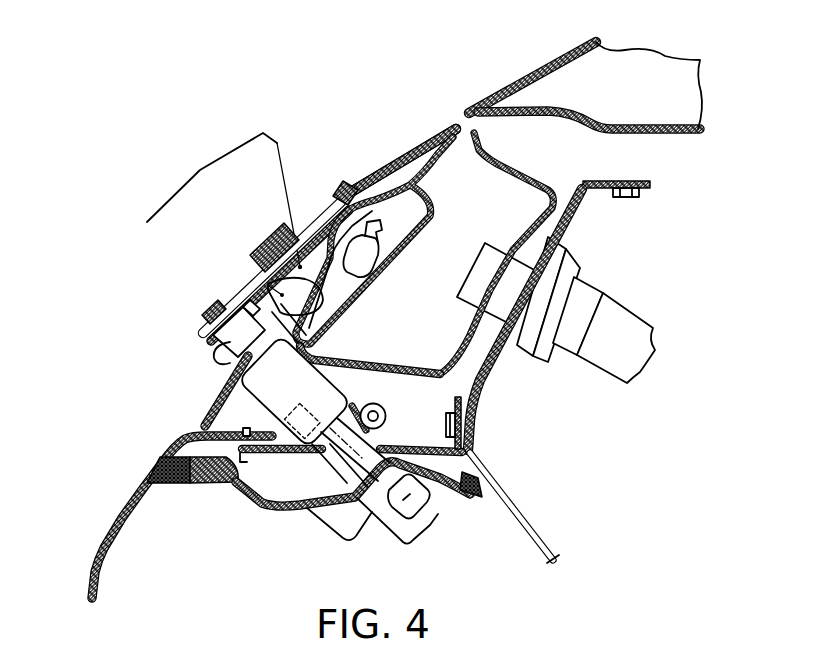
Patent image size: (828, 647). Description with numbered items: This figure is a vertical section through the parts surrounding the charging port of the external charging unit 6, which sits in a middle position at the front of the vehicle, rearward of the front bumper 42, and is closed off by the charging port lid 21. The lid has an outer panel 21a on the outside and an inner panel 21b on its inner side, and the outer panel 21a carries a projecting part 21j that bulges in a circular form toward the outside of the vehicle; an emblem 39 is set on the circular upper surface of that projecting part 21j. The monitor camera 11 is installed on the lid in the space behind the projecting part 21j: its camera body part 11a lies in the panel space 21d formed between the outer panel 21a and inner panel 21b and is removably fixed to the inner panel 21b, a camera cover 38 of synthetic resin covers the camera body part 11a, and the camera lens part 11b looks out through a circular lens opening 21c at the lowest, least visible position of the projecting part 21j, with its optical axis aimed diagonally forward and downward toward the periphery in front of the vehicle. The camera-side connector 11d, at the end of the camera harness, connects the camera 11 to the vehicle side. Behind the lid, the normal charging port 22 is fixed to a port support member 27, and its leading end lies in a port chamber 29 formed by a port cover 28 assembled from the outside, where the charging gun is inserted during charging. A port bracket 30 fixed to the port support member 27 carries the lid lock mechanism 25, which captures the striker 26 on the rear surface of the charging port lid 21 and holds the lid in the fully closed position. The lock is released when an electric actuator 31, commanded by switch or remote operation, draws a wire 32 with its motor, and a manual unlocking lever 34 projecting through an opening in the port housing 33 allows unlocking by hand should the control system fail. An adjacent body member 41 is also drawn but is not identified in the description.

The external charging unit 6 is at (300, 120).
The monitor camera 11 is at (200, 170).
The camera body part 11a is at (237, 331).
The camera lens part 11b is at (226, 302).
The camera-side connector 11d is at (353, 250).
The charging port lid 21 is at (400, 152).
The outer panel 21a is at (413, 148).
The inner panel 21b is at (422, 185).
The lens opening 21c is at (208, 345).
The panel space 21d is at (281, 232).
The projecting part 21j is at (319, 197).
The normal charging port 22 is at (490, 280).
The lid lock mechanism 25 is at (367, 430).
The striker 26 is at (331, 376).
The port support member 27 is at (527, 512).
The port cover 28 is at (528, 180).
The port chamber 29 is at (492, 224).
The port bracket 30 is at (434, 446).
The electric actuator 31 is at (436, 522).
The wire 32 is at (355, 410).
The port housing 33 is at (213, 484).
The manual unlocking lever 34 is at (391, 508).
The camera cover 38 is at (389, 272).
The emblem 39 is at (199, 305).
The roof panel 41 is at (542, 72).
The front bumper 42 is at (100, 543).